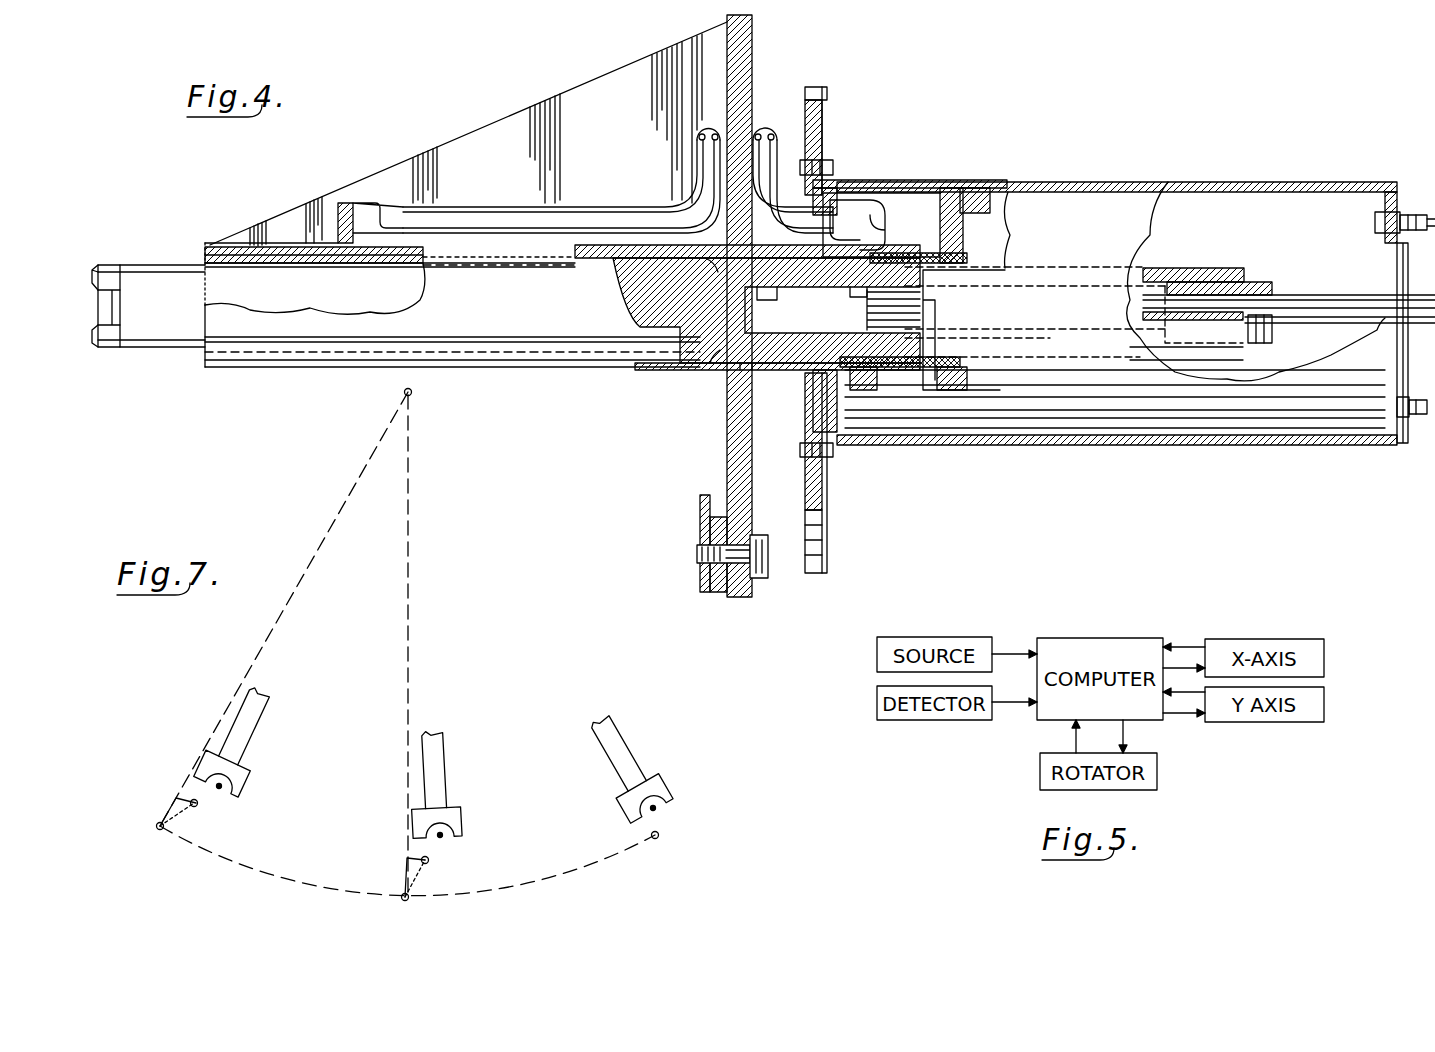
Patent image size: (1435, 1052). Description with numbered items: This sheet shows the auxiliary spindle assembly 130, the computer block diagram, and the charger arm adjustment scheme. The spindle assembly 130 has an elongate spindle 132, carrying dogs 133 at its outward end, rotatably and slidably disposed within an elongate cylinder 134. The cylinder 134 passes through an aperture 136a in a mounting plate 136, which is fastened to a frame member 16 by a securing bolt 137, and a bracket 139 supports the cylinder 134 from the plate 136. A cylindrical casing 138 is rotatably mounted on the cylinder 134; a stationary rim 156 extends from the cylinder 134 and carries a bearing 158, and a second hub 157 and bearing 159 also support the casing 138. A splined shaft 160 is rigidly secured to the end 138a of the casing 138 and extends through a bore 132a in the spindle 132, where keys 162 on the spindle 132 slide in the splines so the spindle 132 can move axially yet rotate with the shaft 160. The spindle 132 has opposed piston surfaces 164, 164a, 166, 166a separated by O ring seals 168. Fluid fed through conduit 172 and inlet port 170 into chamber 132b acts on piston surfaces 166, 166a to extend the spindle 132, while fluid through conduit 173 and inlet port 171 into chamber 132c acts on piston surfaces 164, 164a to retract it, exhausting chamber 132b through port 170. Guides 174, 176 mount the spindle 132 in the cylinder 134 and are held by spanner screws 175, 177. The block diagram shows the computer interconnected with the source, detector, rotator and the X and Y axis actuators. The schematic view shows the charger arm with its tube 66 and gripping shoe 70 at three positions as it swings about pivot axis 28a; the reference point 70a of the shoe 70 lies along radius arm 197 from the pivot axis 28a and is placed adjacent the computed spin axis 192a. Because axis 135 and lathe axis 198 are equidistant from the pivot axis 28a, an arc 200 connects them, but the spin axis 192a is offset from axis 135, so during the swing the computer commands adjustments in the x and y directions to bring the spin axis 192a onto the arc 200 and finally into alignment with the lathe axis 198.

In FIG. 4, the frame member 16 is at (705, 495).
In FIG. 7, the pivot axis 28a is at (404, 393).
In FIG. 7, the tube 66 is at (255, 718).
In FIG. 7, the shoe 70 is at (242, 780).
In FIG. 7, the reference point 70a is at (225, 790).
In FIG. 4, the auxiliary spindle assembly 130 is at (1232, 135).
In FIG. 4, the spindle 132 is at (150, 335).
In FIG. 4, the bore 132a is at (860, 312).
In FIG. 4, the chamber 132b is at (773, 322).
In FIG. 4, the chamber 132c is at (562, 270).
In FIG. 4, the dogs 133 is at (120, 249).
In FIG. 4, the cylinder 134 is at (510, 362).
In FIG. 7, the axis 135 is at (157, 829).
In FIG. 4, the mounting plate 136 is at (736, 446).
In FIG. 4, the aperture 136a is at (752, 366).
In FIG. 4, the securing bolt 137 is at (762, 536).
In FIG. 4, the casing 138 is at (1113, 192).
In FIG. 4, the end of casing 138a is at (1400, 283).
In FIG. 4, the bracket 139 is at (578, 102).
In FIG. 4, the rim 156 is at (846, 386).
In FIG. 4, the hub 157 is at (945, 205).
In FIG. 4, the bearing 158 is at (846, 184).
In FIG. 4, the bearing 159 is at (975, 186).
In FIG. 4, the splined shaft 160 is at (1310, 300).
In FIG. 4, the keys 162 is at (1262, 281).
In FIG. 4, the piston surface 164 is at (660, 258).
In FIG. 4, the piston surface 164a is at (747, 314).
In FIG. 4, the piston surface 166 is at (771, 298).
In FIG. 4, the piston surface 166a is at (832, 298).
In FIG. 4, the O ring seals 168 is at (716, 258).
In FIG. 4, the inlet port 170 is at (882, 240).
In FIG. 4, the inlet port 171 is at (356, 222).
In FIG. 4, the conduit 172 is at (766, 150).
In FIG. 4, the conduit 173 is at (708, 136).
In FIG. 4, the guide 174 is at (900, 256).
In FIG. 4, the spanner screw 175 is at (948, 270).
In FIG. 4, the guide 176 is at (306, 260).
In FIG. 4, the spanner screw 177 is at (215, 260).
In FIG. 7, the spin axis 192a is at (197, 805).
In FIG. 7, the radius arm 197 is at (273, 632).
In FIG. 7, the lathe axis 198 is at (658, 835).
In FIG. 7, the arc 200 is at (583, 870).
In FIG. 7, the X direction x is at (407, 857).
In FIG. 7, the Y direction y is at (405, 880).